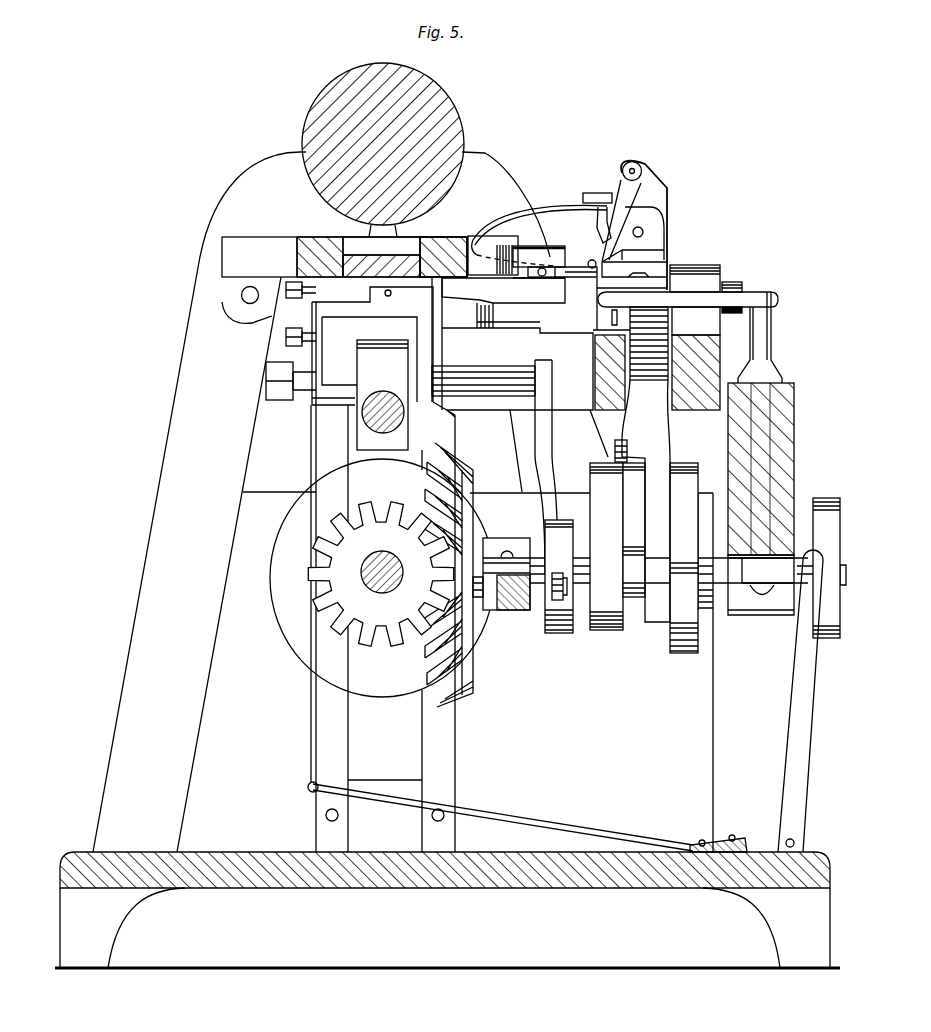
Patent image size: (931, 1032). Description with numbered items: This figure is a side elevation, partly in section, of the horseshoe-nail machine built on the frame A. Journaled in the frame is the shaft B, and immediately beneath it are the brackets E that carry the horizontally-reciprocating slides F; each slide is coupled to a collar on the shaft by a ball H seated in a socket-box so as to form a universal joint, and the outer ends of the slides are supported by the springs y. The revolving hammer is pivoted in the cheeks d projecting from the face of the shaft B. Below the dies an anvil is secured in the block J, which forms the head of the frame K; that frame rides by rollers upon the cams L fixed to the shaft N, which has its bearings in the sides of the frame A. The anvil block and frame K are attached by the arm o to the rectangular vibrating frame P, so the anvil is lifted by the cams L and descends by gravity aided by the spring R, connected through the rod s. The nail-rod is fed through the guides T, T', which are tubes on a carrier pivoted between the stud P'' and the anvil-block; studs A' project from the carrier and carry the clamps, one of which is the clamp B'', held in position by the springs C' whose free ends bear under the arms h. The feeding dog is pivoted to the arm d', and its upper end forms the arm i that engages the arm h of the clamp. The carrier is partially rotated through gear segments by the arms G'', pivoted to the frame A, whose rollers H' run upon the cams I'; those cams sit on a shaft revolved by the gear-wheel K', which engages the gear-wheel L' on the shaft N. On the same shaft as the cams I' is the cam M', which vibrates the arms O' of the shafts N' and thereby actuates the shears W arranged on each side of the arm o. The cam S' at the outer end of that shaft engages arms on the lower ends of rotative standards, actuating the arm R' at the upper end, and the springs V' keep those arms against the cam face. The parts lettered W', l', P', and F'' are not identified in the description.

The frame A is at (447, 560).
The shaft B is at (383, 150).
The ball H is at (381, 246).
The horizontally-reciprocating slide F is at (484, 332).
The bracket E is at (443, 256).
The shears W is at (383, 346).
The shaft N is at (382, 461).
The arm o is at (519, 344).
The guide T' is at (644, 436).
The guide T is at (532, 253).
The spring C' is at (539, 230).
The clamp arm h is at (597, 188).
The dog arm i is at (602, 225).
The cheeks d is at (638, 161).
The arm d' is at (621, 221).
The clamp B'' is at (644, 225).
The stud A' is at (632, 270).
The hook W' is at (612, 317).
The arm R' is at (688, 297).
The stud P'' is at (695, 279).
The vibrating frame P is at (696, 358).
The column l' is at (761, 461).
The shear shaft N' is at (483, 381).
The arm O' is at (546, 466).
The anvil block J is at (671, 573).
The cam M' is at (559, 584).
The pin P' is at (525, 622).
The cam I' is at (644, 558).
The roller H' is at (681, 593).
The arm G'' is at (642, 518).
The lever F'' is at (646, 464).
The cam S' is at (826, 568).
The spring V' is at (800, 701).
The spring R is at (527, 817).
The rod s is at (302, 593).
The spring y is at (377, 723).
The cam L is at (382, 578).
The frame K is at (448, 575).
The gear-wheel L' is at (380, 574).
The gear-wheel K' is at (492, 574).